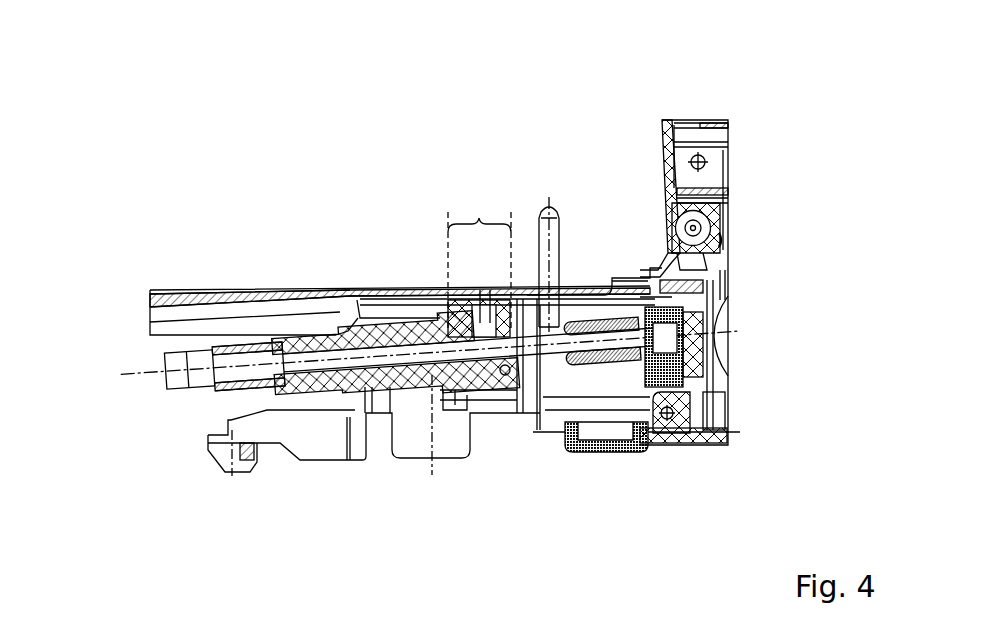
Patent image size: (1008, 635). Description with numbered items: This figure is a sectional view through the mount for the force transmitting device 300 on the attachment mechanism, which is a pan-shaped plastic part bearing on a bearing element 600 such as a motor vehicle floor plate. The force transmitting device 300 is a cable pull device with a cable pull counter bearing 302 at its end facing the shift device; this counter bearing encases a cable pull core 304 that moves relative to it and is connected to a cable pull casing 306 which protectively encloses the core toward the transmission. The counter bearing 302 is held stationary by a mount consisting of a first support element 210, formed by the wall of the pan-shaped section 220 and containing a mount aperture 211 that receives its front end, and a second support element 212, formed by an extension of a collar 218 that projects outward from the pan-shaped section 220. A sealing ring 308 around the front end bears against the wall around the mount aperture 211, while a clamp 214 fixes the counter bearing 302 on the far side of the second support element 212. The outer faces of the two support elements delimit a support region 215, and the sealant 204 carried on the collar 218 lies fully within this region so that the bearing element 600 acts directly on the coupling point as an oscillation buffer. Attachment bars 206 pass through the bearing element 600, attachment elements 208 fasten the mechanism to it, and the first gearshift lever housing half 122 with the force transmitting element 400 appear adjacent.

The bearing element 600 is at (316, 287).
The second support element 212 is at (463, 313).
The support region 215 is at (479, 218).
The clamp 214 is at (474, 320).
The attachment bar 206 is at (553, 240).
The first gearshift lever housing half 122 is at (660, 168).
The cable pull casing 306 is at (160, 345).
The force transmitting device 300 is at (190, 403).
The attachment element 208 is at (216, 453).
The cable pull counter bearing 302 is at (335, 392).
The cable pull core 304 is at (410, 372).
The collar 218 is at (433, 374).
The sealant 204 is at (488, 408).
The sealing ring 308 is at (523, 368).
The first support element 210 is at (532, 425).
The mount aperture 211 is at (560, 385).
The pan-shaped section 220 is at (682, 436).
The force transmitting element 400 is at (701, 424).